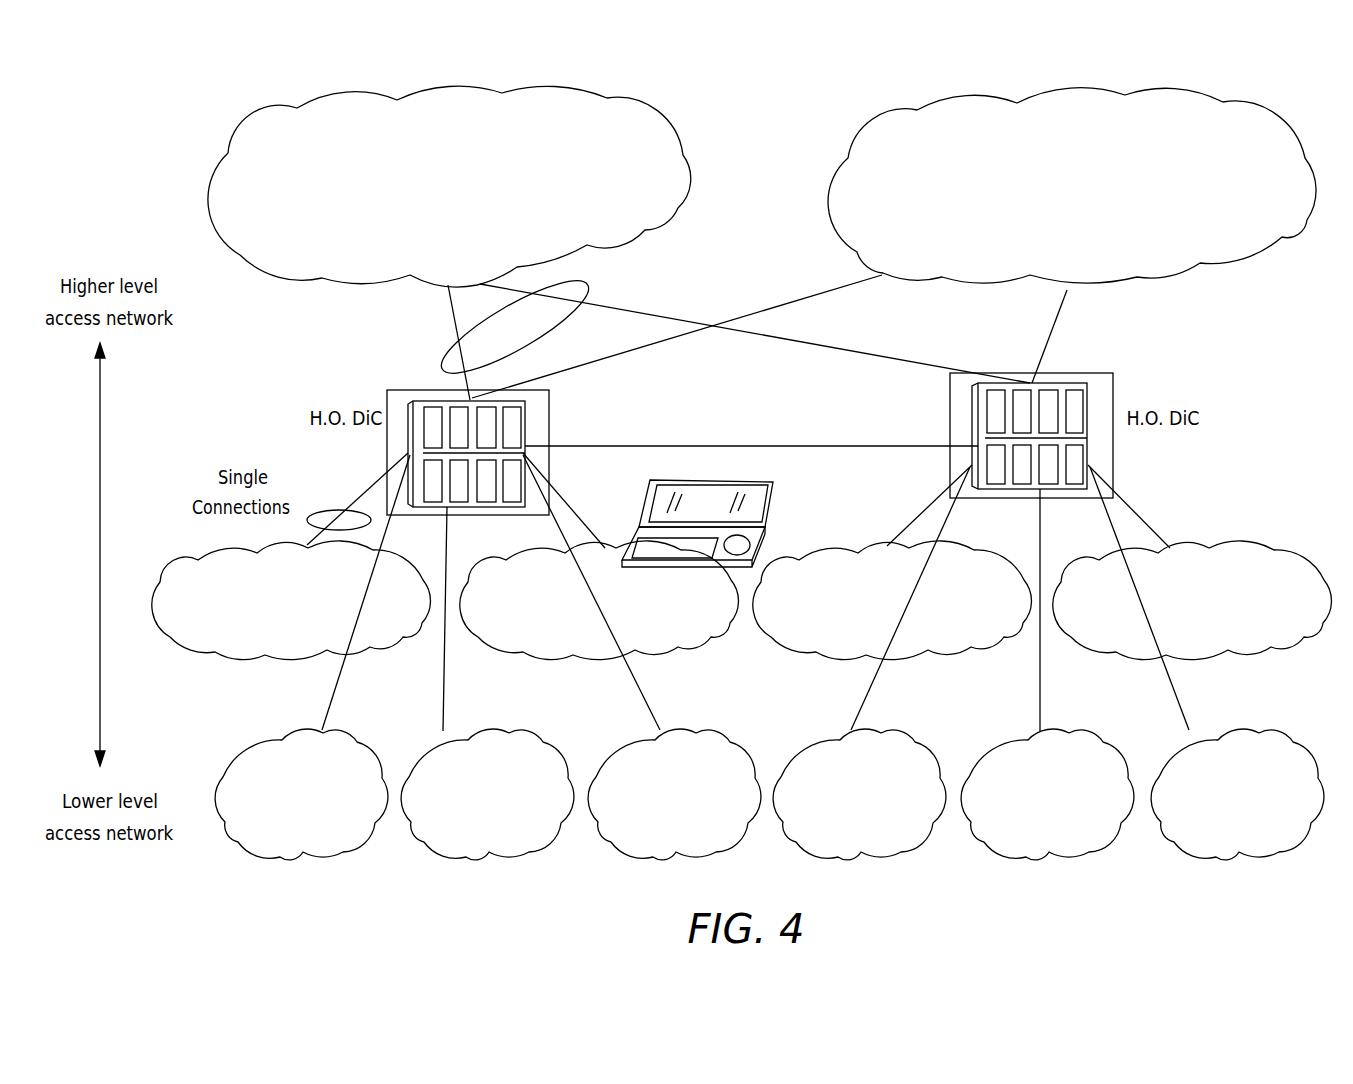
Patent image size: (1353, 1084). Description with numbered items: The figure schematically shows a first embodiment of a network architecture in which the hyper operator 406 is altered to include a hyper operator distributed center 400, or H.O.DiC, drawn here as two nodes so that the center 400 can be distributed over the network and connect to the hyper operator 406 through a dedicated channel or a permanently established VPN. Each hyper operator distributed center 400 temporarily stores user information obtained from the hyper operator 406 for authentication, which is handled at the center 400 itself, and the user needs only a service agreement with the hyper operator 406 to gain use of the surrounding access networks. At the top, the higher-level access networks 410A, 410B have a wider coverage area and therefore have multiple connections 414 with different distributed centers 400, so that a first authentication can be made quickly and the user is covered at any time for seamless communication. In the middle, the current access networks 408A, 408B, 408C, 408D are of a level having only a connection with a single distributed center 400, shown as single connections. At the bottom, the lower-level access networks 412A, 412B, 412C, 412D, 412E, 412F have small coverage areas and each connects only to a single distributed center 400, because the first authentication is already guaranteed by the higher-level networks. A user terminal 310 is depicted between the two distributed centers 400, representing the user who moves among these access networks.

The mobile terminal 310 is at (773, 506).
The hyper operator distributed center 400 is at (432, 413).
The hyper operator 406 is at (549, 412).
The access network 408A is at (255, 612).
The access network 408B is at (526, 612).
The access network 408C is at (843, 612).
The access network 408D is at (1175, 612).
The higher-level access network 410A is at (675, 124).
The higher-level access network 410B is at (1290, 124).
The lower-level access network 412A is at (280, 805).
The lower-level access network 412B is at (468, 805).
The lower-level access network 412C is at (652, 805).
The lower-level access network 412D is at (836, 805).
The lower-level access network 412E is at (1028, 805).
The lower-level access network 412F is at (1218, 805).
The multiple connections 414 is at (588, 287).